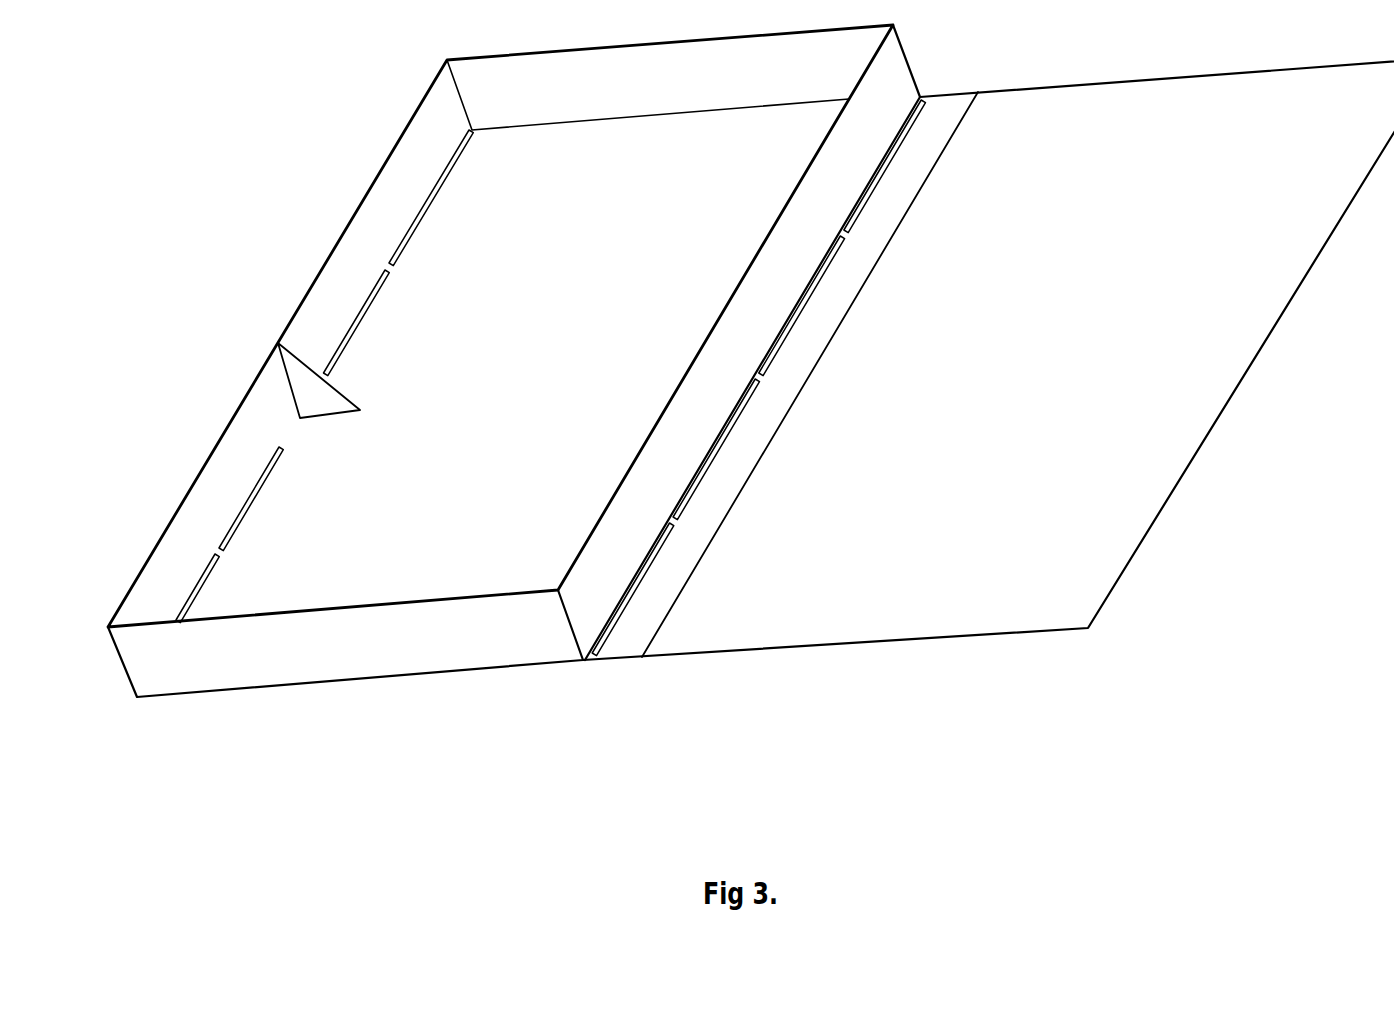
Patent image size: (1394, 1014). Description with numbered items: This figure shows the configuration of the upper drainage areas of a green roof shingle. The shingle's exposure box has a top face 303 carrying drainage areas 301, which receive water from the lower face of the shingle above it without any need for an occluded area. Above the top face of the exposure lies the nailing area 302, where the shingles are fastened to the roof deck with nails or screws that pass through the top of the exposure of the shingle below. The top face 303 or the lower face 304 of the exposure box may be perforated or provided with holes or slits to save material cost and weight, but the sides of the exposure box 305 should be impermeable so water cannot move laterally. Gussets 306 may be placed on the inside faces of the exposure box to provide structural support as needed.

The drainage area 301 is at (809, 313).
The nailing area 302 is at (755, 438).
The top face of the exposure box 303 is at (619, 555).
The lower face of the exposure box 304 is at (400, 188).
The sides of the exposure box 305 is at (410, 623).
The gusset 306 is at (340, 406).